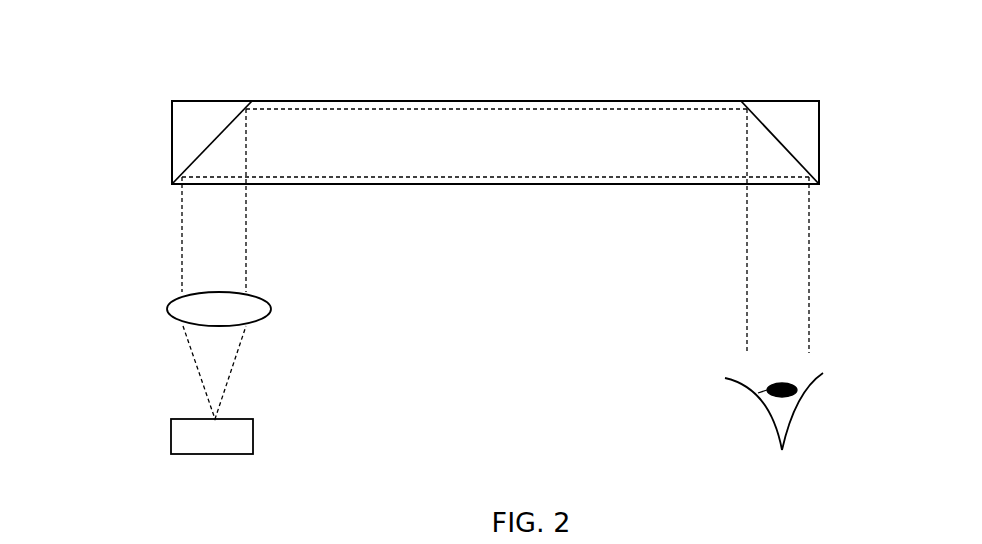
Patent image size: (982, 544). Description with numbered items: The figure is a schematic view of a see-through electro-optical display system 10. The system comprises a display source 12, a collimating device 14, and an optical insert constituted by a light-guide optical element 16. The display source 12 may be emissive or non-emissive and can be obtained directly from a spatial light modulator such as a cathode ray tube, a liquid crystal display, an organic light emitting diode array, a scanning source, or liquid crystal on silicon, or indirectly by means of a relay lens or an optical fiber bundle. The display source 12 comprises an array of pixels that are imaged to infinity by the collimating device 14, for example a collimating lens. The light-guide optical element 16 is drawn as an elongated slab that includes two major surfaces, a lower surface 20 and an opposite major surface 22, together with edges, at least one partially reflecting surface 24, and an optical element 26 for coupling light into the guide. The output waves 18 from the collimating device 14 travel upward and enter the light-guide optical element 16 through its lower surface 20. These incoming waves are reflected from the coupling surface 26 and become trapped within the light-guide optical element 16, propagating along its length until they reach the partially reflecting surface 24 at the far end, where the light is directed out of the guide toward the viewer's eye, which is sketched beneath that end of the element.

The see-through display system 10 is at (167, 90).
The display source 12 is at (253, 447).
The collimating device 14 is at (263, 300).
The light-guide optical element 16 is at (592, 88).
The output waves 18 is at (180, 229).
The lower major surface 20 is at (482, 184).
The major surface 22 is at (332, 101).
The partially reflecting surface 24 is at (768, 130).
The optical element for coupling light 26 is at (217, 137).